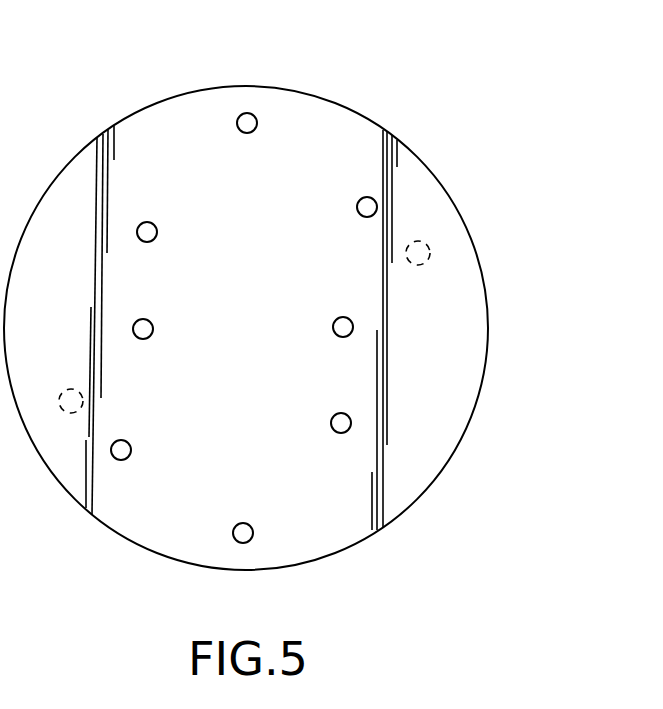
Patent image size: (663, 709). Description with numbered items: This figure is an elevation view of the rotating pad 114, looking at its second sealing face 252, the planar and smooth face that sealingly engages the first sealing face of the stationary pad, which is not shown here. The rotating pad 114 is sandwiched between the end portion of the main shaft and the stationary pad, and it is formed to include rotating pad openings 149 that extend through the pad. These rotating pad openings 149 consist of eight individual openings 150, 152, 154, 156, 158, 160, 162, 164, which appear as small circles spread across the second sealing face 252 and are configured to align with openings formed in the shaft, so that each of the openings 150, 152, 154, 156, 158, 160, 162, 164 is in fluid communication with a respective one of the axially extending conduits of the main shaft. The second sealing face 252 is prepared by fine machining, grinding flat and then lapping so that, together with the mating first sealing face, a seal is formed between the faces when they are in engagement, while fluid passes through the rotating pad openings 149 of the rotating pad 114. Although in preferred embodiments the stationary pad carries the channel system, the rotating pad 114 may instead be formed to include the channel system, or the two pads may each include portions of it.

The rotating pad 114 is at (403, 110).
The rotating pad openings 149 is at (142, 203).
The opening 150 is at (255, 108).
The opening 152 is at (258, 532).
The opening 154 is at (160, 231).
The opening 156 is at (356, 208).
The opening 158 is at (155, 324).
The opening 160 is at (333, 335).
The opening 162 is at (131, 442).
The opening 164 is at (331, 424).
The second sealing face 252 is at (427, 383).